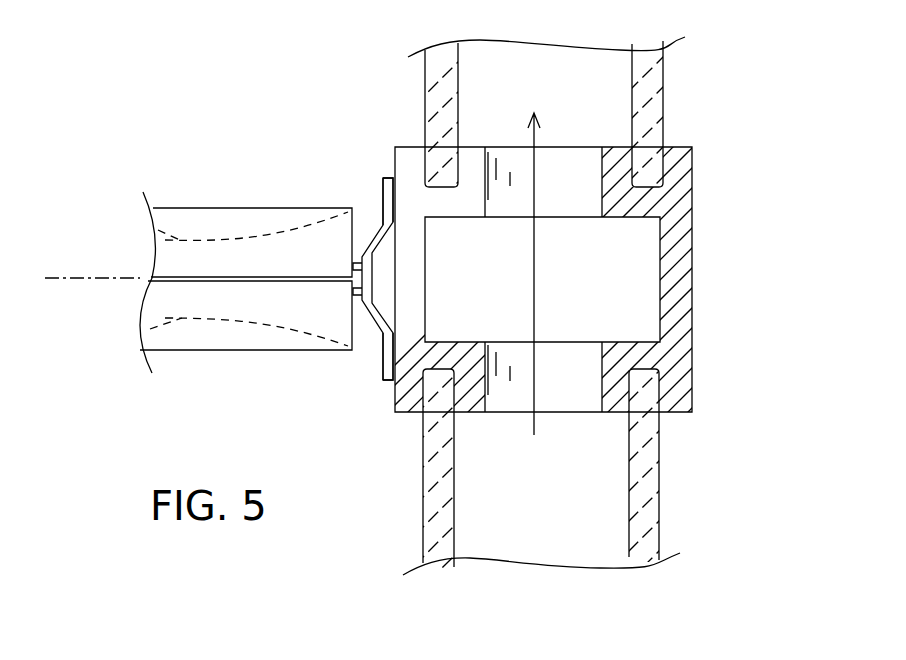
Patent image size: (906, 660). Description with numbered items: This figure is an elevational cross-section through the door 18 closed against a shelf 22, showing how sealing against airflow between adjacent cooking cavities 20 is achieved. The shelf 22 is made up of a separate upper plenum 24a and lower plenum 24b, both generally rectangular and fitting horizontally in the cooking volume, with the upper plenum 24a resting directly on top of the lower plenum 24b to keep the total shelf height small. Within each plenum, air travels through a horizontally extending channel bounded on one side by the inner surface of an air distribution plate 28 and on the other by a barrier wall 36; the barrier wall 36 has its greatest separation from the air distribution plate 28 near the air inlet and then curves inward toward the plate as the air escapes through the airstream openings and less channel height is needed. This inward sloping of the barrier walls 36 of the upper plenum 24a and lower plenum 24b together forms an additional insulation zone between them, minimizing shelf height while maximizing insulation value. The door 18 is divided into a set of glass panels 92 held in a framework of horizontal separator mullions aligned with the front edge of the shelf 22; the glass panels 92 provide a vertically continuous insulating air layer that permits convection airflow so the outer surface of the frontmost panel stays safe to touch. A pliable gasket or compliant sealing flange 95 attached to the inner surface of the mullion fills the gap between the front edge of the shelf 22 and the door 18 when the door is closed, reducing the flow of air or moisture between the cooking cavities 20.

The door 18 is at (688, 122).
The glass panels 92 is at (692, 262).
The shelf 22 is at (288, 150).
The compliant sealing flange 95 is at (383, 197).
The upper plenum 24a is at (255, 208).
The lower plenum 24b is at (245, 350).
The air distribution plate 28 is at (205, 188).
The barrier wall 36 is at (157, 232).
The cooking cavities 20 is at (188, 148).